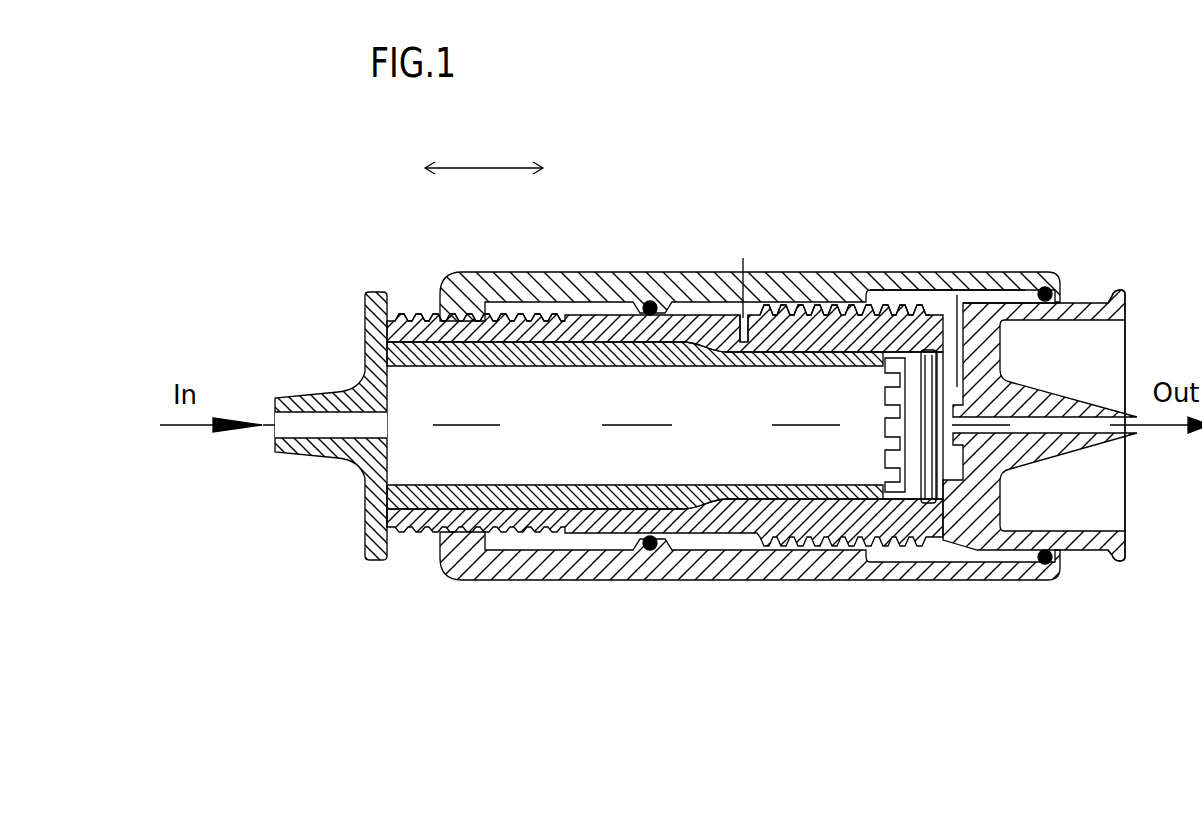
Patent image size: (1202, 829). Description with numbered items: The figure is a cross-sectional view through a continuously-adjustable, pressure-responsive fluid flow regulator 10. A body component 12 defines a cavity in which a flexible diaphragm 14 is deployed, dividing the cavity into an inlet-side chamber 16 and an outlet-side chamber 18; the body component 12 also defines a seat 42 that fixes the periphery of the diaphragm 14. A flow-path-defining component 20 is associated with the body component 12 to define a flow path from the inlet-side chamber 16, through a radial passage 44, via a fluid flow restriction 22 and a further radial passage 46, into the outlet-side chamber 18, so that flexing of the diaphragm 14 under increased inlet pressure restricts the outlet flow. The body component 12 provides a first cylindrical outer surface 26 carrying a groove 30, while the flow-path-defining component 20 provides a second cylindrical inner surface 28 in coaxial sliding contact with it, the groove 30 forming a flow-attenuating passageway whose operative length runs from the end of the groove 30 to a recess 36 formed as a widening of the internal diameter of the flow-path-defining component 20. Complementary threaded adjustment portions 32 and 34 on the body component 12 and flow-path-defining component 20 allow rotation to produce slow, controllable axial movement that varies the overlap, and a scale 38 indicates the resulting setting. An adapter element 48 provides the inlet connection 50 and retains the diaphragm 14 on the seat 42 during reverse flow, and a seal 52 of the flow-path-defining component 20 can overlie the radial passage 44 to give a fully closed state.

The flow regulator 10 is at (781, 227).
The body component 12 is at (1003, 440).
The flexible diaphragm 14 is at (923, 480).
The inlet-side chamber 16 is at (916, 486).
The outlet-side chamber 18 is at (952, 476).
The flow-path-defining component 20 is at (590, 298).
The fluid flow restriction 22 is at (758, 292).
The first cylindrical outer surface 26 is at (887, 308).
The second cylindrical inner surface 28 is at (770, 290).
The groove 30 is at (818, 297).
The threaded adjustment portion 32 is at (410, 320).
The threaded adjustment portion 34 is at (505, 320).
The recess 36 is at (868, 298).
The scale 38 is at (1075, 314).
The seat 42 is at (947, 312).
The radial passage 44 is at (710, 316).
The radial passage 46 is at (995, 312).
The adapter element 48 is at (387, 510).
The inlet connection 50 is at (342, 392).
The seal 52 is at (651, 302).